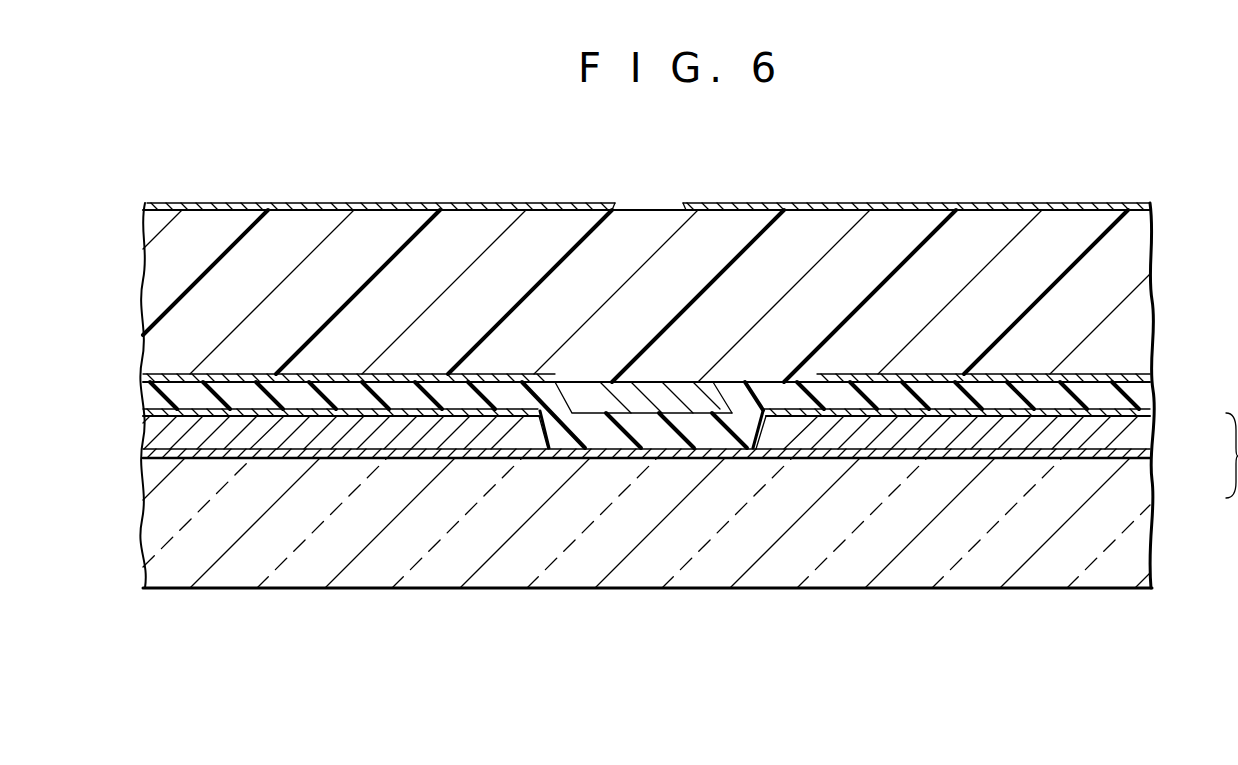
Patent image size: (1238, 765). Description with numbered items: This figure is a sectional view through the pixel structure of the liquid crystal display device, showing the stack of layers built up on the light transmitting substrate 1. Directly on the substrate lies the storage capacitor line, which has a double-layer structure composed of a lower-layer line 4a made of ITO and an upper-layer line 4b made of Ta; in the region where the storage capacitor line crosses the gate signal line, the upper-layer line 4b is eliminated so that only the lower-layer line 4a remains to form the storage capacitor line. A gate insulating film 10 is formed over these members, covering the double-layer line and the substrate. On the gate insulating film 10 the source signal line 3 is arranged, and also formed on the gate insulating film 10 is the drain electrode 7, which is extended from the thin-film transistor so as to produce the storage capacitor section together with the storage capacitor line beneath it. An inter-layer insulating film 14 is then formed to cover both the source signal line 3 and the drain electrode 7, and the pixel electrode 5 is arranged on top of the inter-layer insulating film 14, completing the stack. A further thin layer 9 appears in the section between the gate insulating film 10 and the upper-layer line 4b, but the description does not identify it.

The light transmitting substrate 1 is at (1137, 527).
The source signal line 3 is at (650, 402).
The lower-layer line 4a is at (1145, 454).
The upper-layer line 4b is at (1145, 428).
The pixel electrode 5 is at (157, 204).
The drain electrode 7 is at (157, 372).
The adhesion layer 9 is at (1138, 405).
The gate insulating film 10 is at (1100, 380).
The inter-layer insulating film 14 is at (157, 295).